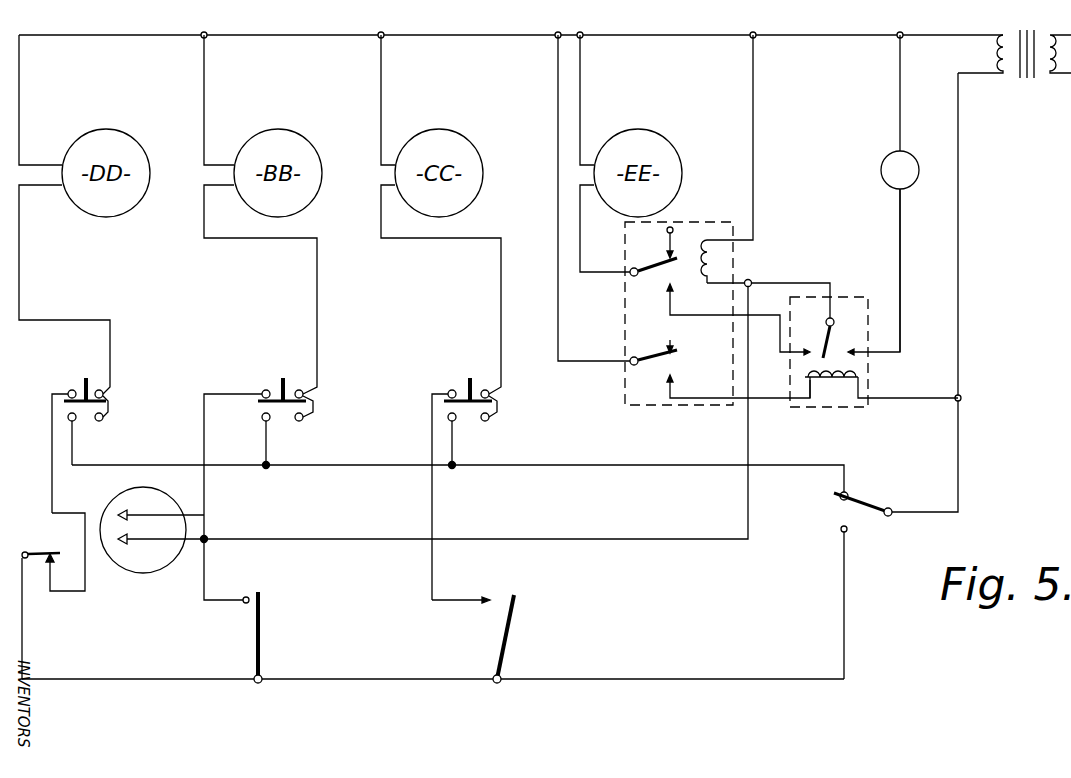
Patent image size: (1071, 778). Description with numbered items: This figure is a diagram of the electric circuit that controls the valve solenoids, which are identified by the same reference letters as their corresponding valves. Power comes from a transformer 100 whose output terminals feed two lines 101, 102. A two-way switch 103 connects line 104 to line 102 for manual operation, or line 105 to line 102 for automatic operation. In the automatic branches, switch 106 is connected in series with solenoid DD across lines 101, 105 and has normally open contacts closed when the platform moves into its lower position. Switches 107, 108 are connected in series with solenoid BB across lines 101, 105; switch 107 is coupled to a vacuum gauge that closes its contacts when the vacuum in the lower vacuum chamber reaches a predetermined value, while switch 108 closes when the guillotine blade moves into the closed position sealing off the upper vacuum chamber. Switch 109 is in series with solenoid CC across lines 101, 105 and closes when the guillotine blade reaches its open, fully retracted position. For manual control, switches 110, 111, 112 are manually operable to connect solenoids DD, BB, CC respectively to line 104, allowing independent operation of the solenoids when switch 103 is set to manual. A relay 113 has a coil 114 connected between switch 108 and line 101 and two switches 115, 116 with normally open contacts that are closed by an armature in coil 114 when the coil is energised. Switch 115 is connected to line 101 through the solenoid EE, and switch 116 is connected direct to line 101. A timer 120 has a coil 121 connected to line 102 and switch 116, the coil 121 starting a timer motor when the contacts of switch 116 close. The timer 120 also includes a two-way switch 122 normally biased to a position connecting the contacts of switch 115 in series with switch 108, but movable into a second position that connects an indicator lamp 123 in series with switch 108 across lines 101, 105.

The transformer 100 is at (1030, 86).
The line 101 is at (268, 38).
The line 102 is at (975, 328).
The two-way switch 103 is at (858, 503).
The line 104 is at (637, 449).
The line 105 is at (636, 678).
The switch 106 is at (35, 550).
The switch 107 is at (133, 530).
The switch 108 is at (256, 633).
The switch 109 is at (503, 637).
The switch 110 is at (80, 391).
The switch 111 is at (276, 391).
The switch 112 is at (462, 391).
The relay 113 is at (625, 386).
The coil 114 is at (715, 266).
The switch 115 is at (652, 265).
The switch 116 is at (652, 358).
The timer 120 is at (860, 297).
The coil 121 is at (835, 383).
The two-way switch 122 is at (838, 332).
The indicator lamp 123 is at (893, 177).